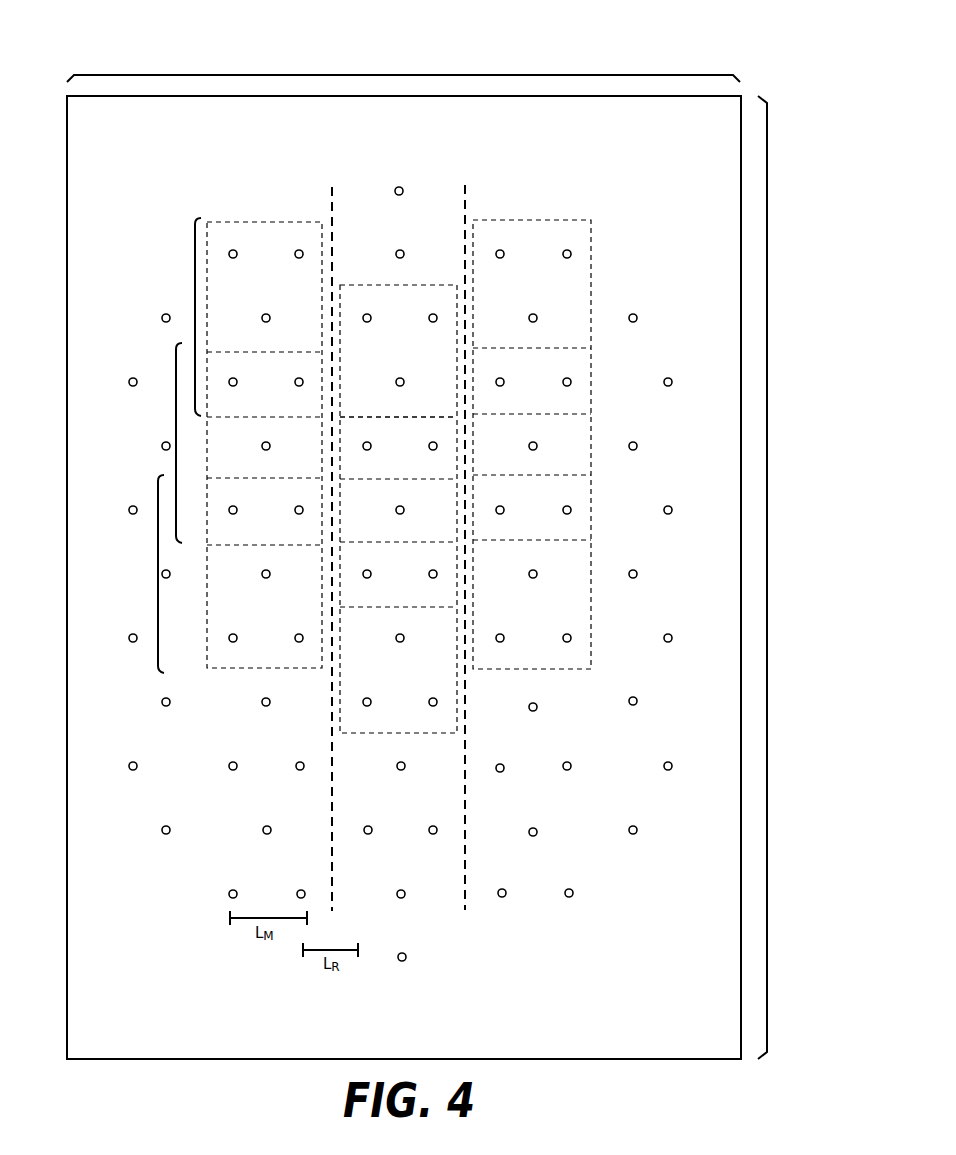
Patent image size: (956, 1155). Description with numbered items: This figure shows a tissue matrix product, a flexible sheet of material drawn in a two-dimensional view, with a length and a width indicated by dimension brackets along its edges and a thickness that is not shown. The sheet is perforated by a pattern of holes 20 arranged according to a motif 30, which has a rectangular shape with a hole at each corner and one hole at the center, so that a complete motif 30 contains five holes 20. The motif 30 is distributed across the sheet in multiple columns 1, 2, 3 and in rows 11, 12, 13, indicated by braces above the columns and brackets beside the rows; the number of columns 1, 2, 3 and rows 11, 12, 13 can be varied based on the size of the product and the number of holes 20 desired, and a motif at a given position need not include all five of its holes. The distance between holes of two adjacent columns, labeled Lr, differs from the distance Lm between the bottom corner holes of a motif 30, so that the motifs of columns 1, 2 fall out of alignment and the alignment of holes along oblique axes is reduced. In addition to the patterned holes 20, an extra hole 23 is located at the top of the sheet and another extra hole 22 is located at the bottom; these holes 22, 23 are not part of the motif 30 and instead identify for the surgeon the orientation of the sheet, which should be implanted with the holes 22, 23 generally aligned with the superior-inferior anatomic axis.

The column 1 is at (322, 210).
The column 2 is at (340, 278).
The column 3 is at (473, 211).
The row 11 is at (195, 287).
The row 12 is at (176, 417).
The row 13 is at (158, 547).
The holes 20 is at (571, 906).
The hole 22 is at (389, 956).
The hole 23 is at (389, 184).
The motif 30 is at (436, 406).